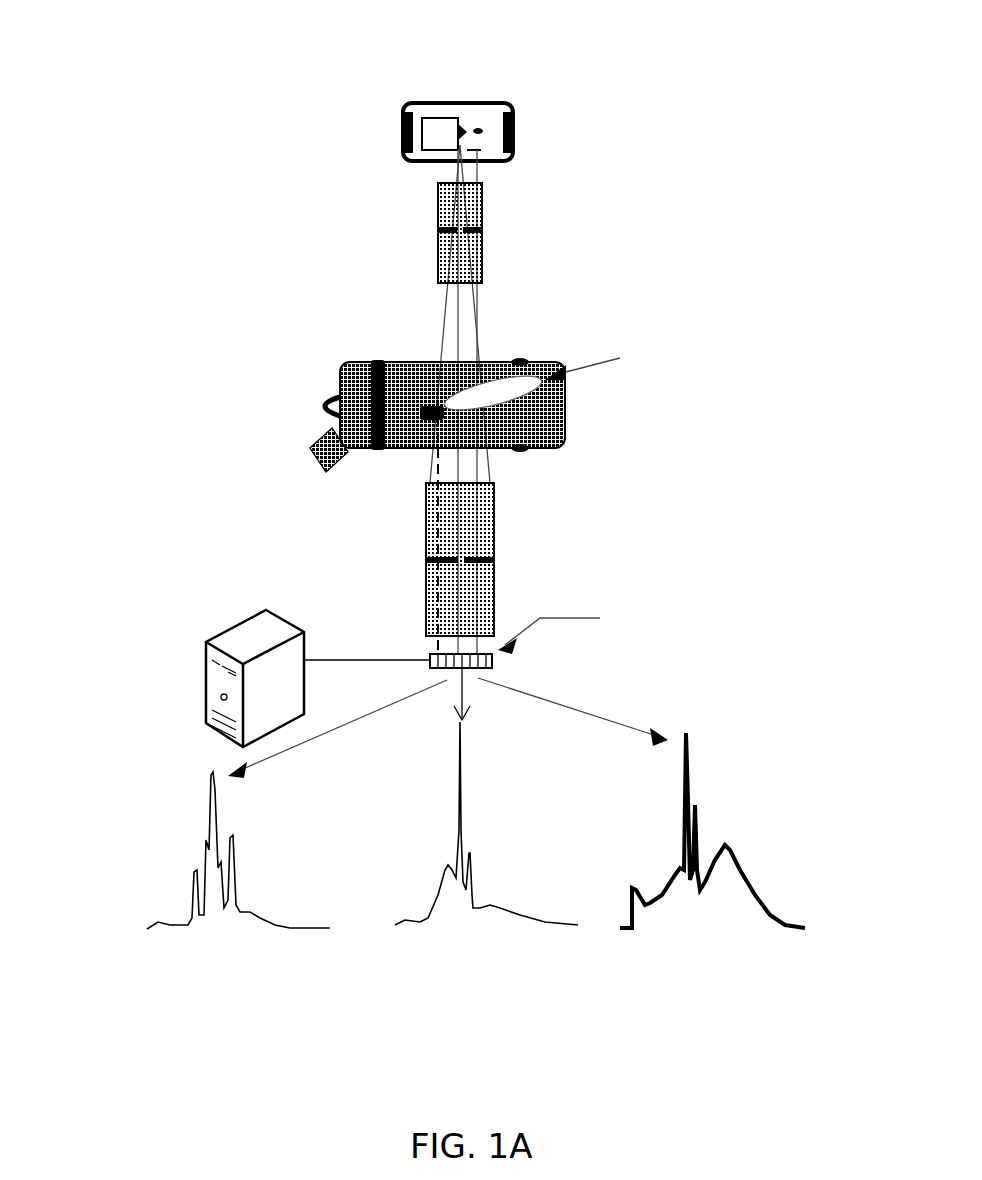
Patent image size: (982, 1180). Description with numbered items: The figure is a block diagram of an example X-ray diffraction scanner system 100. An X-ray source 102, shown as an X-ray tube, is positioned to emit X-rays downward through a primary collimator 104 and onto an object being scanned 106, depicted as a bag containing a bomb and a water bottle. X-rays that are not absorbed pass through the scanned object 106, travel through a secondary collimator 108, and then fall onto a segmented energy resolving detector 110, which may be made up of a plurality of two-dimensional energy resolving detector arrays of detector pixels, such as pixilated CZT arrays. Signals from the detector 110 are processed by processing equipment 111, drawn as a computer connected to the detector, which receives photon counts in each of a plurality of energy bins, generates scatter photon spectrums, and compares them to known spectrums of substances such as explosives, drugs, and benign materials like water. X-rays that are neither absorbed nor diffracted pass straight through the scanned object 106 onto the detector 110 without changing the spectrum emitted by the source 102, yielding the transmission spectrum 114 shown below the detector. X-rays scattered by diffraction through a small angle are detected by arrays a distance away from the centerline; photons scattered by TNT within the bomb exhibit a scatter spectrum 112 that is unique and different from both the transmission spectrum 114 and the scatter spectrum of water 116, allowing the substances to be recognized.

The X-ray diffraction scanner system 100 is at (122, 104).
The X-ray source 102 is at (410, 116).
The primary collimator 104 is at (438, 214).
The object being scanned 106 is at (362, 362).
The secondary collimator 108 is at (426, 558).
The segmented energy resolving detector 110 is at (430, 655).
The processing equipment 111 is at (206, 642).
The scatter spectrum 112 is at (190, 785).
The transmission spectrum 114 is at (434, 860).
The scatter spectrum of water 116 is at (657, 857).